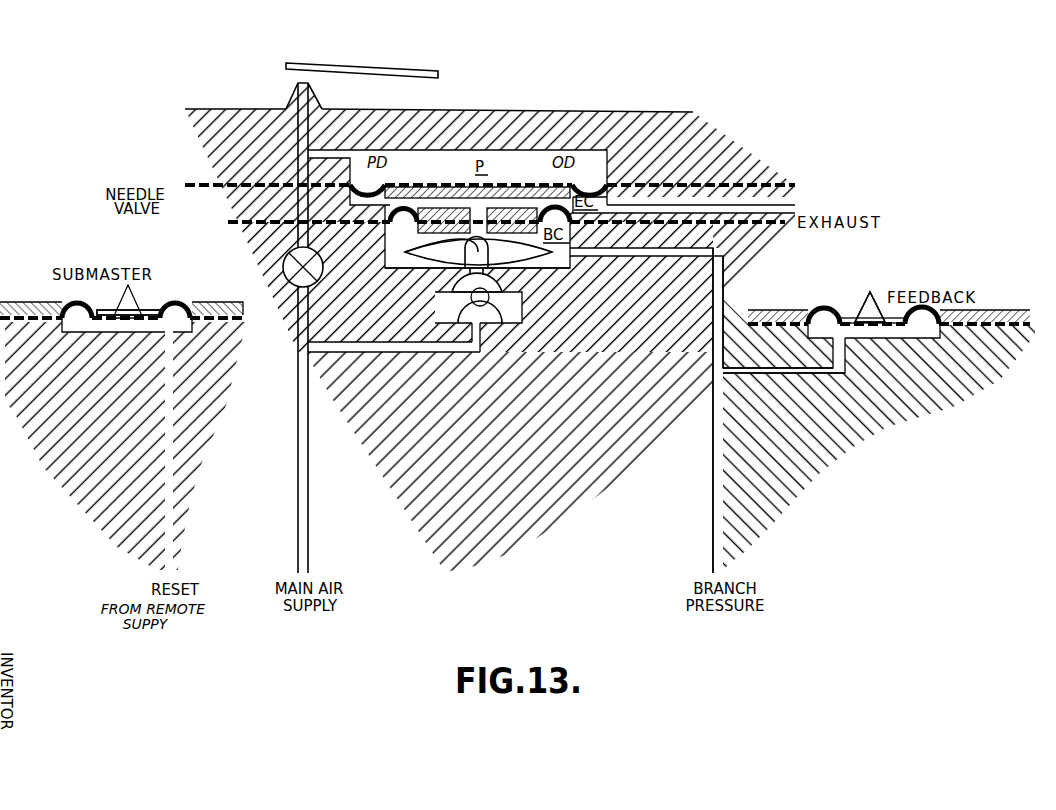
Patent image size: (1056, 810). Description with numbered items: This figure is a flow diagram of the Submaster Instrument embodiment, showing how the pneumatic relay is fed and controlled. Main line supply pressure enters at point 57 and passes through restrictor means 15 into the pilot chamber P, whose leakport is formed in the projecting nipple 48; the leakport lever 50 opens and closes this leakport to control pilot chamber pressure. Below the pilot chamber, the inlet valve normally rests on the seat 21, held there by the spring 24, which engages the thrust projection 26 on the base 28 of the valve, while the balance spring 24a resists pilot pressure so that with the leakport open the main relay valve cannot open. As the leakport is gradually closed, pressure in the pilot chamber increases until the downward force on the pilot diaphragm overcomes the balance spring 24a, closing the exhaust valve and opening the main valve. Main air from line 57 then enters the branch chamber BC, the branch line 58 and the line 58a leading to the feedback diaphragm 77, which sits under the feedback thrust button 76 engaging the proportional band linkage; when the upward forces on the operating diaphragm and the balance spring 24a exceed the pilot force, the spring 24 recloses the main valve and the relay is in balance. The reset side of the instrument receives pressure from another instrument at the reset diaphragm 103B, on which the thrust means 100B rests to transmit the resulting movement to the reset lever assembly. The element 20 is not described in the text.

The restrictor means 15 is at (285, 264).
The vane 20 is at (503, 279).
The seat 21 is at (454, 279).
The spring 24 is at (474, 313).
The balance spring 24a is at (540, 266).
The thrust projection 26 is at (487, 298).
The base 28 is at (480, 284).
The nipple 48 is at (316, 92).
The leakport lever 50 is at (338, 65).
The main line supply pressure point 57 is at (297, 449).
The branch line 58 is at (725, 284).
The line 58a is at (810, 375).
The feedback thrust button 76 is at (870, 292).
The feedback diaphragm 77 is at (832, 310).
The thrust means 100B is at (140, 300).
The reset diaphragm 103B is at (72, 302).